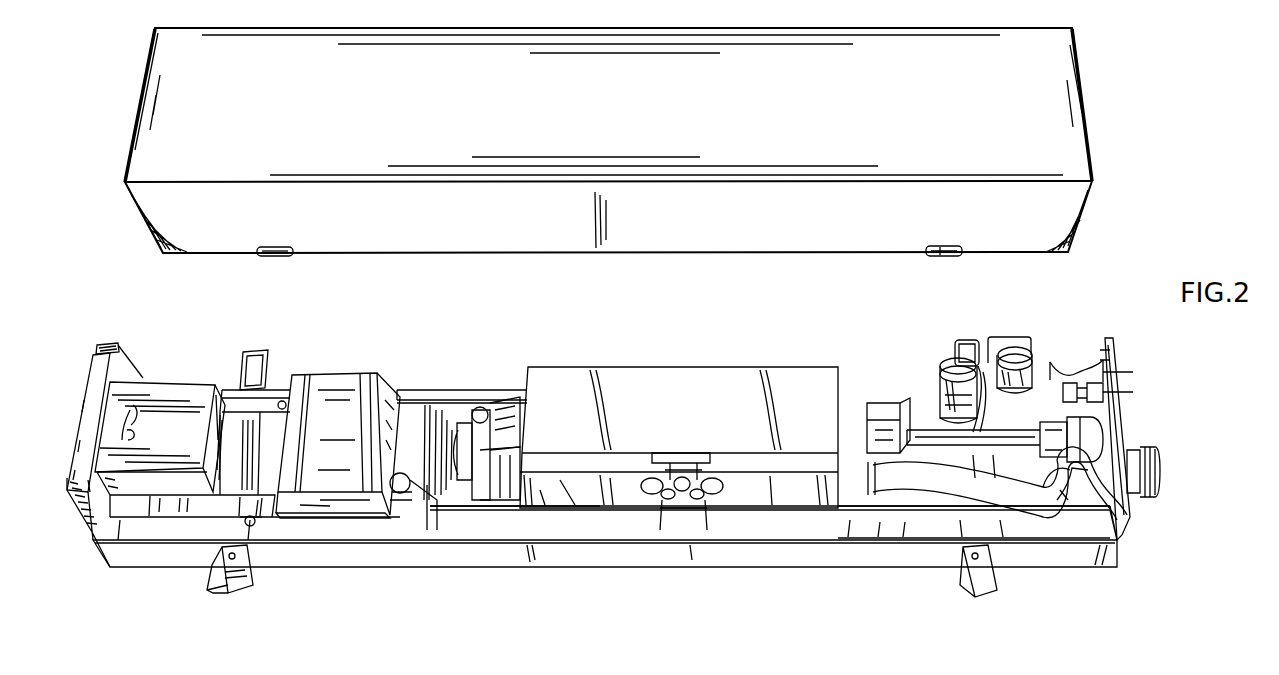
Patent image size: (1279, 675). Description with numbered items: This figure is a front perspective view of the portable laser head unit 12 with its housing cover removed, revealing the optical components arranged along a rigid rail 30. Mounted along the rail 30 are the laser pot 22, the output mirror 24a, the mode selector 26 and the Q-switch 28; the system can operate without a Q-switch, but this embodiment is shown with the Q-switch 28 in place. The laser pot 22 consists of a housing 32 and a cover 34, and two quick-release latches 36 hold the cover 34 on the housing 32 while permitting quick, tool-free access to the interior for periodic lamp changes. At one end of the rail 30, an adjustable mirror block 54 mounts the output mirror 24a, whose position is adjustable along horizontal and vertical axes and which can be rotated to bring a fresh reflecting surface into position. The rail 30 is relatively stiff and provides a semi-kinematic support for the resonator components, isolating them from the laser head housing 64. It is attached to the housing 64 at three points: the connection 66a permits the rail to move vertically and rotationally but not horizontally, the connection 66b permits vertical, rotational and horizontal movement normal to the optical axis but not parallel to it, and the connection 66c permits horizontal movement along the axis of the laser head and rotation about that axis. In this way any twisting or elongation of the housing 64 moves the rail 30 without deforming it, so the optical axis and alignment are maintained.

The laser head unit 12 is at (650, 571).
The laser pot 22 is at (679, 404).
The output mirror 24a is at (137, 400).
The mode selector 26 is at (513, 385).
The Q-switch 28 is at (348, 360).
The rail 30 is at (813, 530).
The housing 32 is at (577, 488).
The cover 34 is at (700, 427).
The quick-release latches 36 is at (720, 492).
The adjustable mirror block 54 is at (196, 371).
The laser head housing 64 is at (402, 558).
The connection 66a is at (268, 512).
The connection 66b is at (284, 401).
The connection 66c is at (1070, 467).